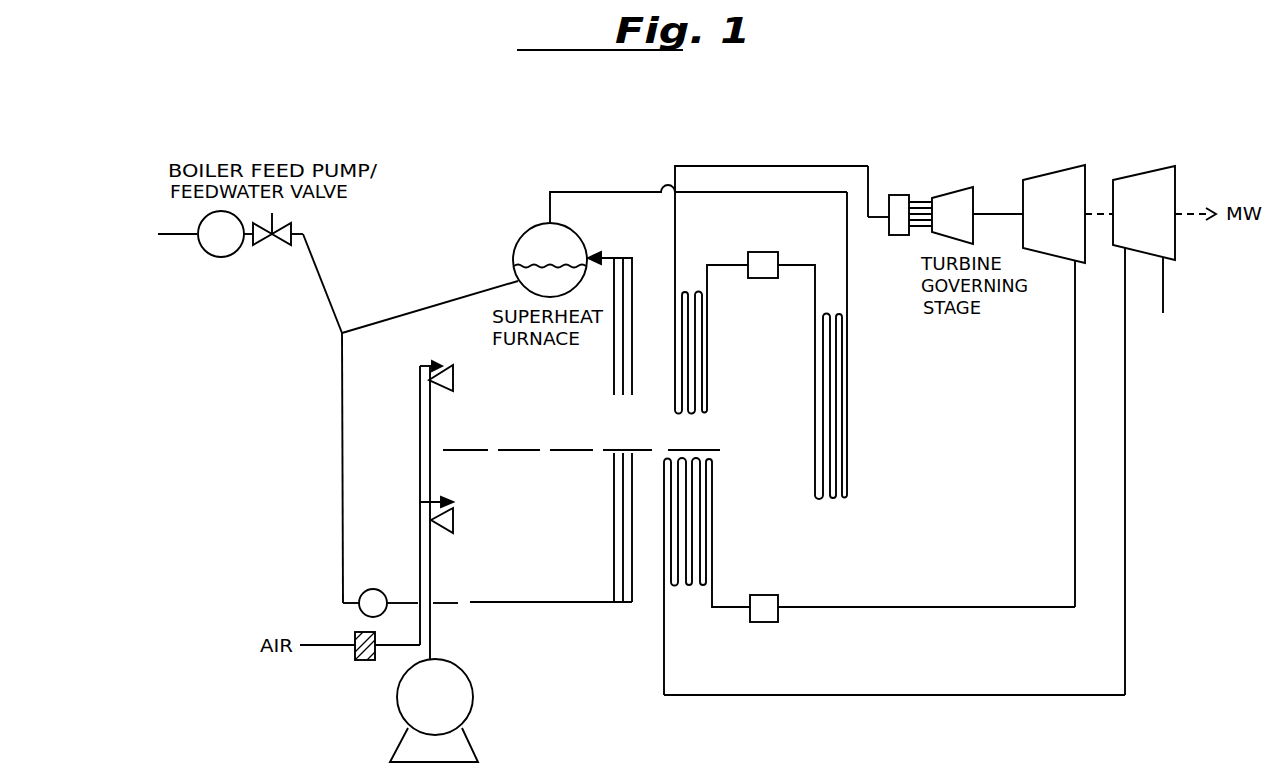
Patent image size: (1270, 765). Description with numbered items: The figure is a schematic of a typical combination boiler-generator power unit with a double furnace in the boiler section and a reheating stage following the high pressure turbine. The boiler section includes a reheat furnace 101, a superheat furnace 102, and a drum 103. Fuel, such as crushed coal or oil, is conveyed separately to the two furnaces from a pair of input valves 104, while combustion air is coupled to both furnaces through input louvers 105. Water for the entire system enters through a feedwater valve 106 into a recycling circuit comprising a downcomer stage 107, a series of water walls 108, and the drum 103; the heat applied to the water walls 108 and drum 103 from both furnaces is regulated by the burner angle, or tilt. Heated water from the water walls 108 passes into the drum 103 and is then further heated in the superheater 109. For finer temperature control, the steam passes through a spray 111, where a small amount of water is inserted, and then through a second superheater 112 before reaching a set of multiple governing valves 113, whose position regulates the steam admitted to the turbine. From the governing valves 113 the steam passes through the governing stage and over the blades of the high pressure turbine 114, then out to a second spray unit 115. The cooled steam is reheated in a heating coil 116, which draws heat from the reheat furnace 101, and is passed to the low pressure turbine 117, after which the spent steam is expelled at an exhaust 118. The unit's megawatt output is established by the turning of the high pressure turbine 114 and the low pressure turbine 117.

The reheat furnace 101 is at (546, 557).
The superheat furnace 102 is at (484, 292).
The drum 103 is at (536, 230).
The input valves 104 is at (432, 646).
The input louvers 105 is at (364, 662).
The feedwater valve 106 is at (283, 243).
The downcomer stage 107 is at (343, 448).
The water walls 108 is at (625, 368).
The superheater 109 is at (848, 350).
The spray 111 is at (770, 258).
The second superheater 112 is at (708, 400).
The multiple governing valves 113 is at (900, 227).
The high pressure turbine 114 is at (1042, 205).
The second spray unit 115 is at (768, 604).
The heating coil 116 is at (697, 510).
The low pressure turbine 117 is at (1166, 237).
The exhaust 118 is at (1163, 298).